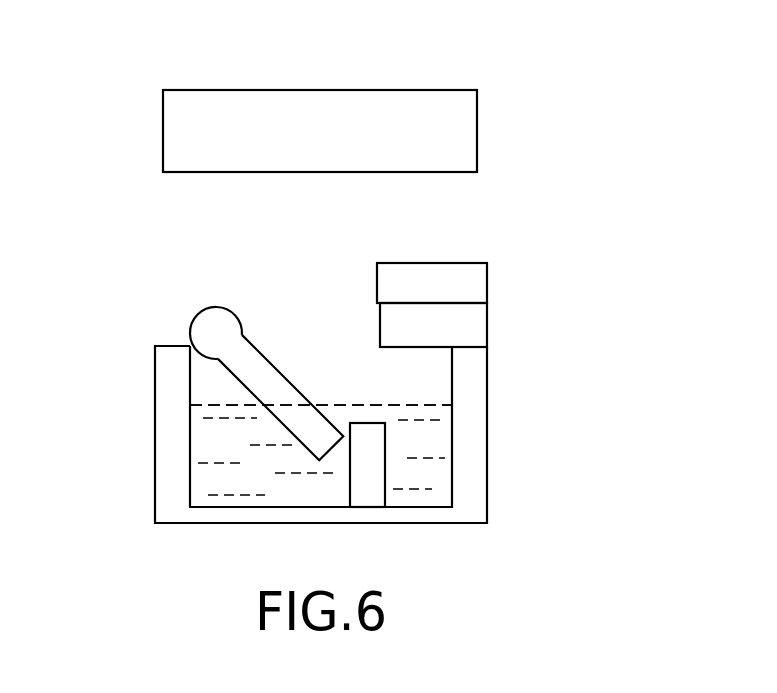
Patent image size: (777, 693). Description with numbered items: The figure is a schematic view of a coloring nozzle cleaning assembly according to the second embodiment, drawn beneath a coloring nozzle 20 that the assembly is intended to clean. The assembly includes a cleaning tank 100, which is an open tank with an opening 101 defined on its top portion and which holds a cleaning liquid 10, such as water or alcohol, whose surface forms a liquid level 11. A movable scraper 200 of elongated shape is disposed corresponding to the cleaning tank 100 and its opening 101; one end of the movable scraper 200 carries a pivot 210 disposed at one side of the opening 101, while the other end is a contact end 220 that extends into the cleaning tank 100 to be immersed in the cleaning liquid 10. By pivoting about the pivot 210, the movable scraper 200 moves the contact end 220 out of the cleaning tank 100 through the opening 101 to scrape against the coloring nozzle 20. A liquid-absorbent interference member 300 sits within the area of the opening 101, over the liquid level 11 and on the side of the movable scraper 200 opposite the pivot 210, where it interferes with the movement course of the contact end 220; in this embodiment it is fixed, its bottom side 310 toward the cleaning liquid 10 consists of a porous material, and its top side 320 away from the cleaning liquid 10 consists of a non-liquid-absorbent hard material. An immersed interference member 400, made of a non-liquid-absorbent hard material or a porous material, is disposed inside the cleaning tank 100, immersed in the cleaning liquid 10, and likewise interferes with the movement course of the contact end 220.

The coloring nozzle 20 is at (320, 95).
The cleaning tank 100 is at (155, 430).
The cleaning liquid 10 is at (432, 442).
The liquid level 11 is at (415, 405).
The opening 101 is at (311, 335).
The movable scraper 200 is at (226, 352).
The pivot 210 is at (205, 318).
The contact end 220 is at (323, 433).
The liquid-absorbent interference member 300 is at (494, 281).
The bottom side 310 is at (468, 325).
The top side 320 is at (433, 270).
The immersed interference member 400 is at (382, 477).